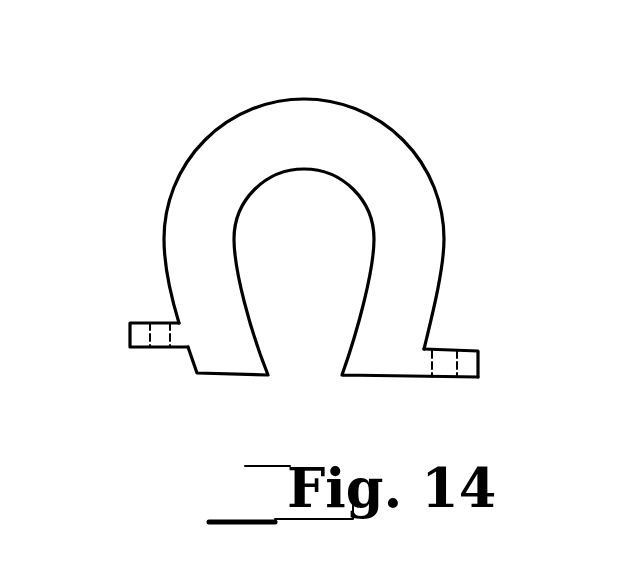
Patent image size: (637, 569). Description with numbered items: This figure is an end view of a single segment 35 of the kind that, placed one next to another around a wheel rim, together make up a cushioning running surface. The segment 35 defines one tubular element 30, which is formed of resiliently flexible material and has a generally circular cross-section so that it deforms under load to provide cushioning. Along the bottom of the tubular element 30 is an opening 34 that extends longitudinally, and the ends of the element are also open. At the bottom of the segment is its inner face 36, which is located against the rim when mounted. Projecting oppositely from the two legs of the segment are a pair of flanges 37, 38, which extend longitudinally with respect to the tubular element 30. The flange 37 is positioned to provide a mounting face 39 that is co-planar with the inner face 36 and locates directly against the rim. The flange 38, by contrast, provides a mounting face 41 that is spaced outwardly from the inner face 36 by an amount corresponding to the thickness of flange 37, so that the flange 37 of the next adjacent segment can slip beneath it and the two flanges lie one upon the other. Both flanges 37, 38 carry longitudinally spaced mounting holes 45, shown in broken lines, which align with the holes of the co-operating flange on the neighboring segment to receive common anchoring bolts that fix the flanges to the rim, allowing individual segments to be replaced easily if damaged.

The tubular element 30 is at (252, 123).
The opening 34 is at (292, 358).
The segment 35 is at (132, 161).
The inner face 36 is at (230, 373).
The flange 37 is at (482, 352).
The flange 38 is at (130, 335).
The mounting face 39 is at (468, 380).
The mounting face 41 is at (143, 347).
The mounting holes 45 is at (157, 323).